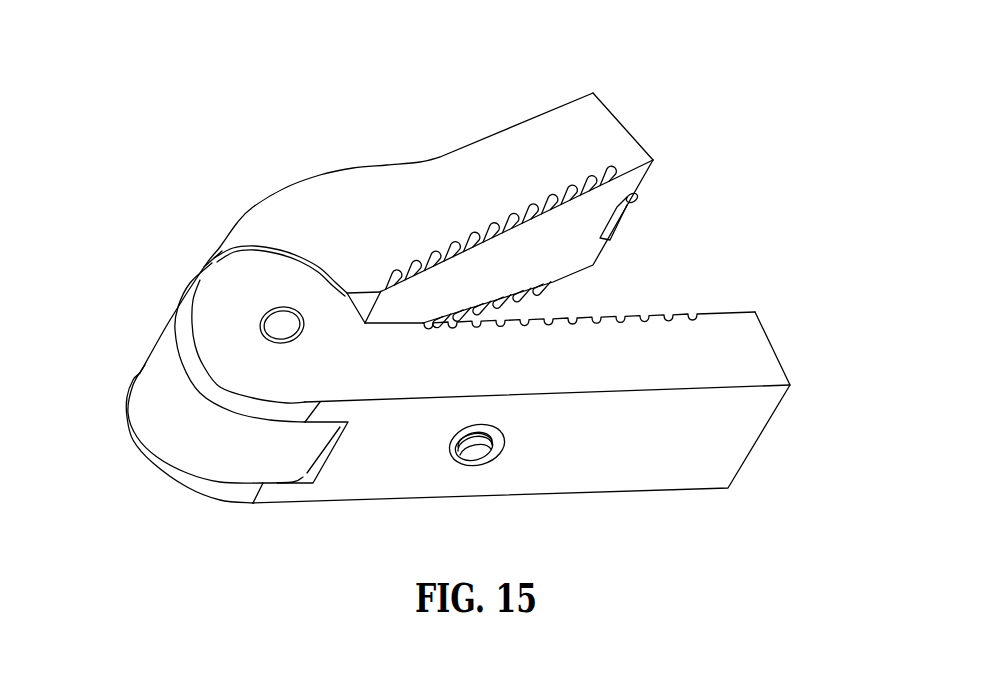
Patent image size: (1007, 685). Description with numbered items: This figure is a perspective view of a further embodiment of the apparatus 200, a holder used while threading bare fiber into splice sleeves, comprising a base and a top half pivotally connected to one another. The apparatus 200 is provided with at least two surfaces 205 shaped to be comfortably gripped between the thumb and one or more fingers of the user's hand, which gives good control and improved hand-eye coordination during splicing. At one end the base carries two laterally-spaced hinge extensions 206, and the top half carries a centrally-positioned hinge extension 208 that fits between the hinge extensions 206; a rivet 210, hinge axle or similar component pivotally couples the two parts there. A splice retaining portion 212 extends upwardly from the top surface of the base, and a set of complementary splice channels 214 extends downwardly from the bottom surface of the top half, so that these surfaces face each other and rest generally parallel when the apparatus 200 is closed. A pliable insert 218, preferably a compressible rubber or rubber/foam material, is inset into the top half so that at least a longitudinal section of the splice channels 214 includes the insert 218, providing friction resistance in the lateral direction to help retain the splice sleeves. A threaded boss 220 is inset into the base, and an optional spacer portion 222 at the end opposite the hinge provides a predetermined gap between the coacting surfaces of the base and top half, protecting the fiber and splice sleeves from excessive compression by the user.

The apparatus 200 is at (831, 103).
The surfaces 205 is at (693, 467).
The hinge extensions 206 is at (210, 285).
The hinge extension 208 is at (163, 365).
The rivet 210 is at (280, 318).
The splice retaining portion 212 is at (672, 316).
The splice channels 214 is at (592, 182).
The pliable insert 218 is at (537, 247).
The threaded boss 220 is at (473, 453).
The spacer portion 222 is at (627, 220).